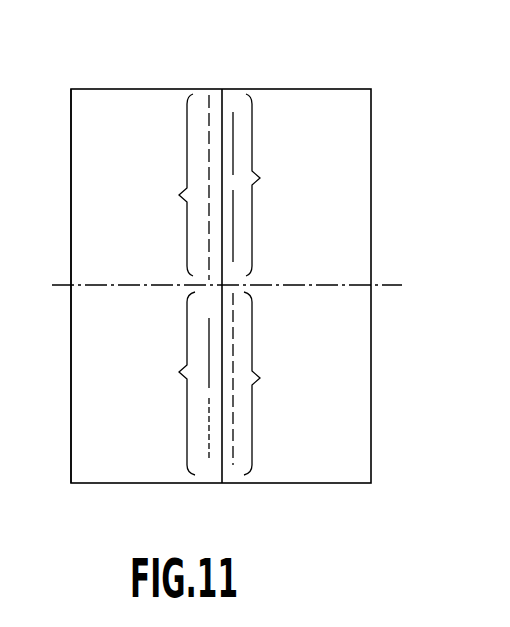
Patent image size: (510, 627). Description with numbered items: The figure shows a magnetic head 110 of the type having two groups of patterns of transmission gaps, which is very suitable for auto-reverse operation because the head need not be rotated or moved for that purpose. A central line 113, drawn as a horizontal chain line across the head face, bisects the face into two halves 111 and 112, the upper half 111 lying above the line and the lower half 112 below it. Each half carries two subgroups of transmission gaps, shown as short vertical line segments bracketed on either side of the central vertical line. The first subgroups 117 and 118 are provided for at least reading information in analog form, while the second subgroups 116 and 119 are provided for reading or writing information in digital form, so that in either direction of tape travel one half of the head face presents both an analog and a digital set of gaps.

The magnetic head 110 is at (371, 90).
The first half of the head face 111 is at (88, 180).
The second half of the head face 112 is at (85, 379).
The central line 113 is at (385, 283).
The second subgroup of transmission gaps 116 is at (176, 187).
The first subgroup of transmission gaps 117 is at (173, 383).
The first subgroup of transmission gaps 118 is at (264, 185).
The second subgroup of transmission gaps 119 is at (264, 383).